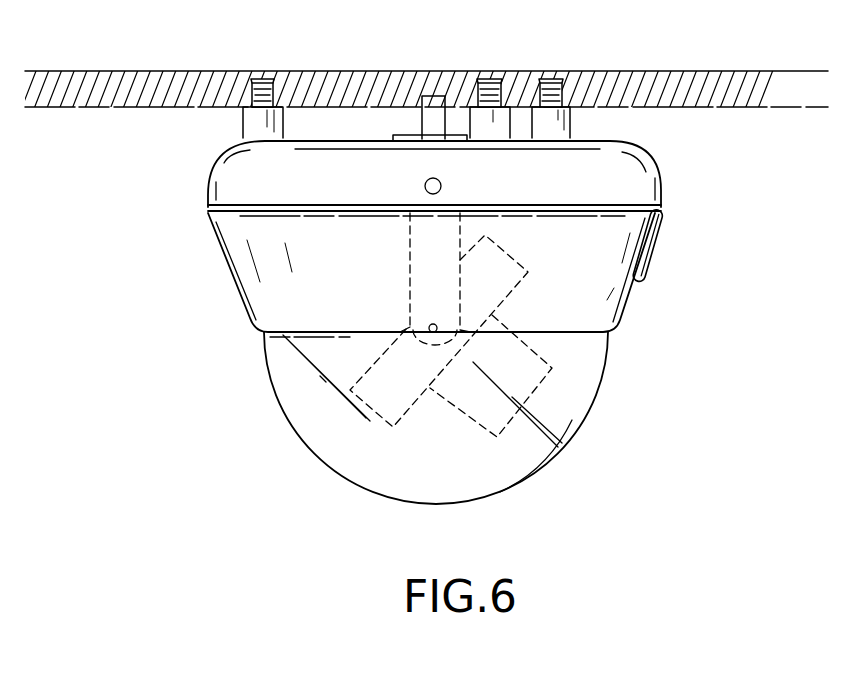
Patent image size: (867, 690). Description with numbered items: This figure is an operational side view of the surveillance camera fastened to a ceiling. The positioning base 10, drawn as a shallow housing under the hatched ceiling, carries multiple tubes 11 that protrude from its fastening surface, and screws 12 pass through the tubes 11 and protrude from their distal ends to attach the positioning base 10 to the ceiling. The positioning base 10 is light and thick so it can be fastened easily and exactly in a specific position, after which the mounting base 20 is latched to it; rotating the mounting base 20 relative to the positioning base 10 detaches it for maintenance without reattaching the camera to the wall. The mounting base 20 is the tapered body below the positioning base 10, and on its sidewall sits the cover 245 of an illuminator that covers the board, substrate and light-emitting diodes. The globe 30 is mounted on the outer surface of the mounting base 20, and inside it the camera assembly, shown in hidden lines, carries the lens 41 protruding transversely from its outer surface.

The positioning base 10 is at (213, 192).
The tube 11 is at (258, 127).
The screw 12 is at (265, 79).
The mounting base 20 is at (255, 289).
The cover 245 is at (655, 237).
The globe 30 is at (470, 480).
The lens 41 is at (530, 397).